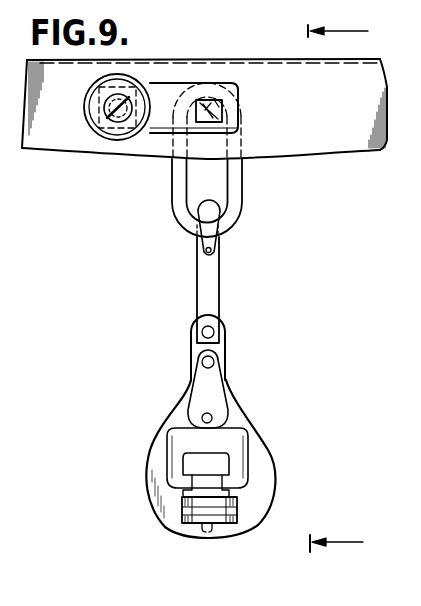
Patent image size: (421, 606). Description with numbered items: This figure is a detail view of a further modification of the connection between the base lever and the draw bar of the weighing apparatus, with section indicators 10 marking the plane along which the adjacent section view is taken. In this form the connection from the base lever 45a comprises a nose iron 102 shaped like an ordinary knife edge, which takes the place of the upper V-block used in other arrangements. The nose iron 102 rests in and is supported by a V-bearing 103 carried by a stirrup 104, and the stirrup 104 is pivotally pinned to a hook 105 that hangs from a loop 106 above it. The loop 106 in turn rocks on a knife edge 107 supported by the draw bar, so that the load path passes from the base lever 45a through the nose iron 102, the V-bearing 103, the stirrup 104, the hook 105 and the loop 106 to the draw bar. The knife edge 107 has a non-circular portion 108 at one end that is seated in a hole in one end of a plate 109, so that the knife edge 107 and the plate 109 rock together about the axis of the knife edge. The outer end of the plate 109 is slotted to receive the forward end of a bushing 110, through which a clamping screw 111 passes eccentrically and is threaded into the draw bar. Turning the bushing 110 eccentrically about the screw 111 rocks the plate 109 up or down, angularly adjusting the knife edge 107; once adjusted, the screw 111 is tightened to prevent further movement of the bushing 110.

The section line indicator 10 is at (327, 287).
The base lever 45a is at (195, 465).
The nose iron 102 is at (222, 493).
The V-bearing 103 is at (217, 523).
The stirrup 104 is at (227, 368).
The hook 105 is at (217, 280).
The loop 106 is at (178, 168).
The knife edge 107 is at (218, 98).
The non-circular portion 108 is at (213, 118).
The plate 109 is at (163, 90).
The bushing 110 is at (95, 107).
The clamping screw 111 is at (117, 116).